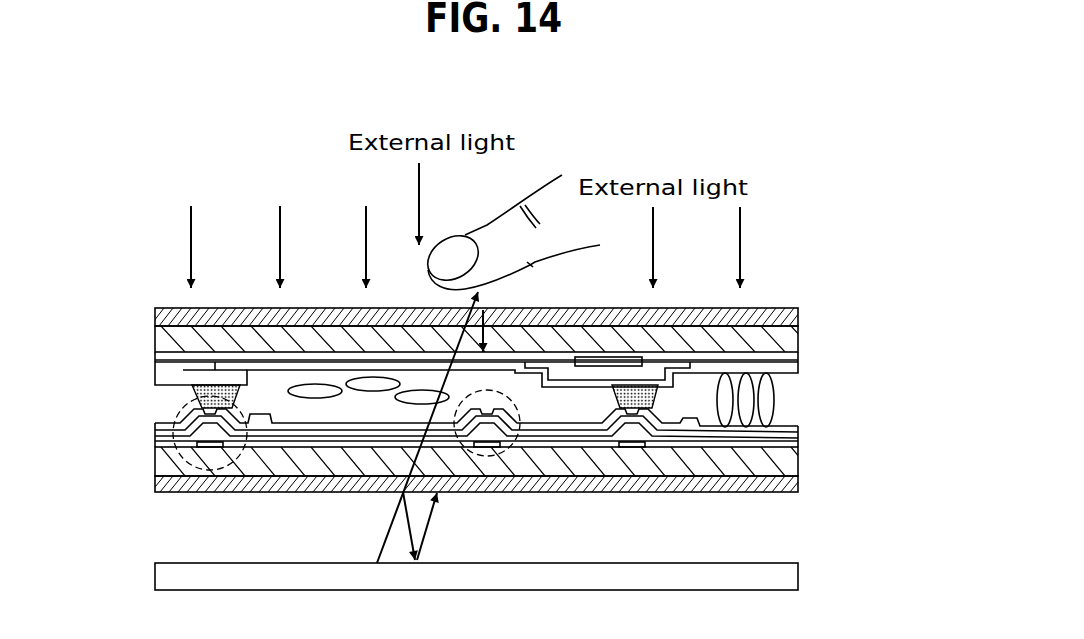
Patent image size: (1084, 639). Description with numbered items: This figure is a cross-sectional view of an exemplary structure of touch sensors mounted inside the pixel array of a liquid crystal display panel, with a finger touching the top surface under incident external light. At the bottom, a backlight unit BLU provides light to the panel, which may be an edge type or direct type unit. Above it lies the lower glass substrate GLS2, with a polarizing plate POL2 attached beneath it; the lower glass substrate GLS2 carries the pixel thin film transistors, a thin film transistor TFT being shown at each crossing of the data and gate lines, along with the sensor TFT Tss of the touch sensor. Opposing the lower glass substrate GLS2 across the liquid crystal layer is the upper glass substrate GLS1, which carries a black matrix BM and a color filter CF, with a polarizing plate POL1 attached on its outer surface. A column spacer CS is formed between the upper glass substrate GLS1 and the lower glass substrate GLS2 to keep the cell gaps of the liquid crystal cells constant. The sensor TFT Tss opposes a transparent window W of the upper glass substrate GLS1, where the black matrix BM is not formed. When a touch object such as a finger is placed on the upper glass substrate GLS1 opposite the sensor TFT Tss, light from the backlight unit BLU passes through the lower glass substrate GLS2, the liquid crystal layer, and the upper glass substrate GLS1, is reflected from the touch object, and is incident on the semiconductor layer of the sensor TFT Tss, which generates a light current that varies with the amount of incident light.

The polarizing plate POL1 is at (798, 318).
The upper glass substrate GLS1 is at (798, 333).
The color filter CF is at (790, 357).
The black matrix BM is at (603, 360).
The transparent window W is at (480, 372).
The sensor TFT Tss is at (518, 404).
The column spacer CS is at (655, 395).
The thin film transistor TFT is at (182, 406).
The lower glass substrate GLS2 is at (798, 462).
The polarizing plate POL2 is at (798, 483).
The backlight unit BLU is at (790, 578).